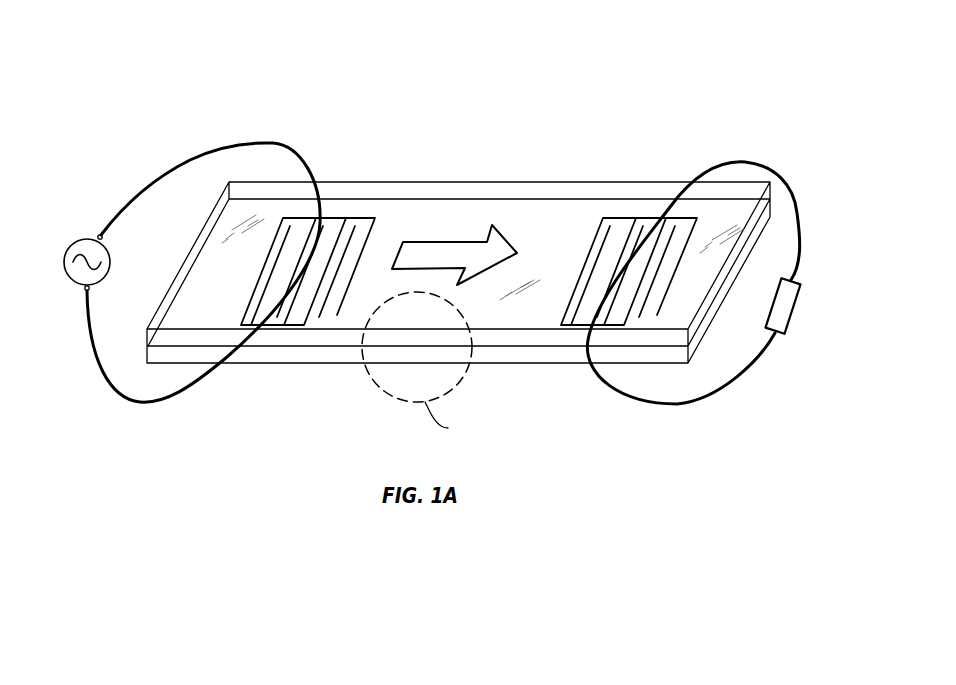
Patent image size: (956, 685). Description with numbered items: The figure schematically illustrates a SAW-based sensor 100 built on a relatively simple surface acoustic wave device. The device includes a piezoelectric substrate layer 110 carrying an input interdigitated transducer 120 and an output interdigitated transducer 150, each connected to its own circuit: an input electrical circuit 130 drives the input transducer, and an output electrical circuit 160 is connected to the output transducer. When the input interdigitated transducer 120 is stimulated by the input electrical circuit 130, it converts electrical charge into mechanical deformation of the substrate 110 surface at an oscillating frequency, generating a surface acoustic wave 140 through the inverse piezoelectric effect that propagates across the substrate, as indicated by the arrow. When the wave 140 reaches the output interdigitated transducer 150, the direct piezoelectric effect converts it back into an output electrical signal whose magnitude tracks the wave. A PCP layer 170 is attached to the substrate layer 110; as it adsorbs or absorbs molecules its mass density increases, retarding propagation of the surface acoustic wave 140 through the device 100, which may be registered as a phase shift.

The SAW-based sensor 100 is at (392, 80).
The piezoelectric substrate layer 110 is at (520, 355).
The input interdigitated transducer 120 is at (366, 231).
The input electrical circuit 130 is at (100, 236).
The surface acoustic wave 140 is at (493, 248).
The output interdigitated transducer 150 is at (615, 228).
The output electrical circuit 160 is at (787, 174).
The PCP layer 170 is at (357, 309).